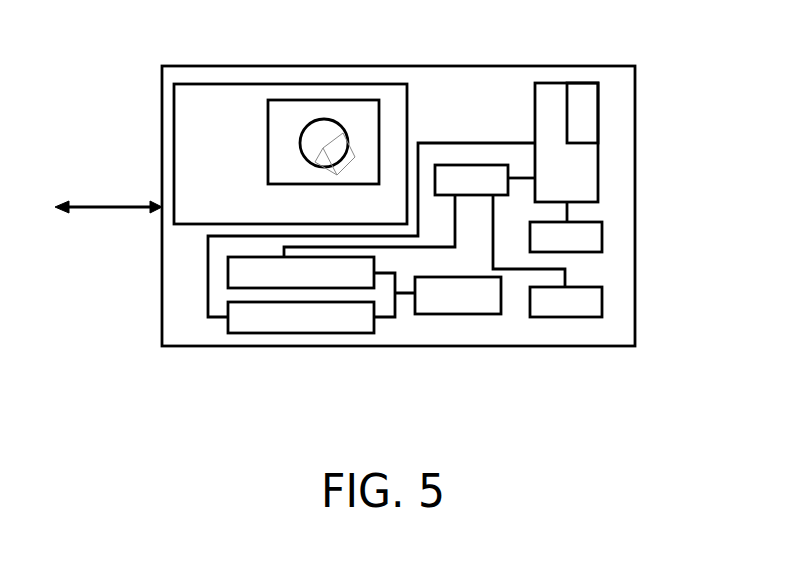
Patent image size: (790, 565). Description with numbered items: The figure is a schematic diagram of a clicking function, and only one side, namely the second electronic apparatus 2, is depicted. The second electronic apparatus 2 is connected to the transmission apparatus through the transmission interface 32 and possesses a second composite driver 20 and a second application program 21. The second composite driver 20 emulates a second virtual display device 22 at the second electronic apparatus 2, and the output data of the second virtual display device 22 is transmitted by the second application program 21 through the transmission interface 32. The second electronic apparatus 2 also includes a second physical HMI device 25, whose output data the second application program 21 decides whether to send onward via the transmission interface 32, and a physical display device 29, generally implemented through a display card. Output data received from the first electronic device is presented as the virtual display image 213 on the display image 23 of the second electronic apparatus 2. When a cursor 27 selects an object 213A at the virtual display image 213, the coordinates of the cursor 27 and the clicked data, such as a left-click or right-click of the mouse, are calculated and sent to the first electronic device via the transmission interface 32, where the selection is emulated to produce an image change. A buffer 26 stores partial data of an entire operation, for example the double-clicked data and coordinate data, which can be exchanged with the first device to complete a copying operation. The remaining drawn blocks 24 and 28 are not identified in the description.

The second electronic apparatus 2 is at (398, 346).
The second composite driver 20 is at (485, 314).
The second application program 21 is at (552, 82).
The second virtual display device 22 is at (228, 270).
The display image 23 is at (270, 83).
The storage unit 24 is at (237, 333).
The second physical HMI device 25 is at (602, 233).
The buffer 26 is at (582, 90).
The cursor 27 is at (320, 143).
The input unit 28 is at (447, 165).
The physical display device 29 is at (602, 299).
The transmission interface 32 is at (88, 207).
The virtual display image 213 is at (302, 100).
The object 213A is at (340, 128).